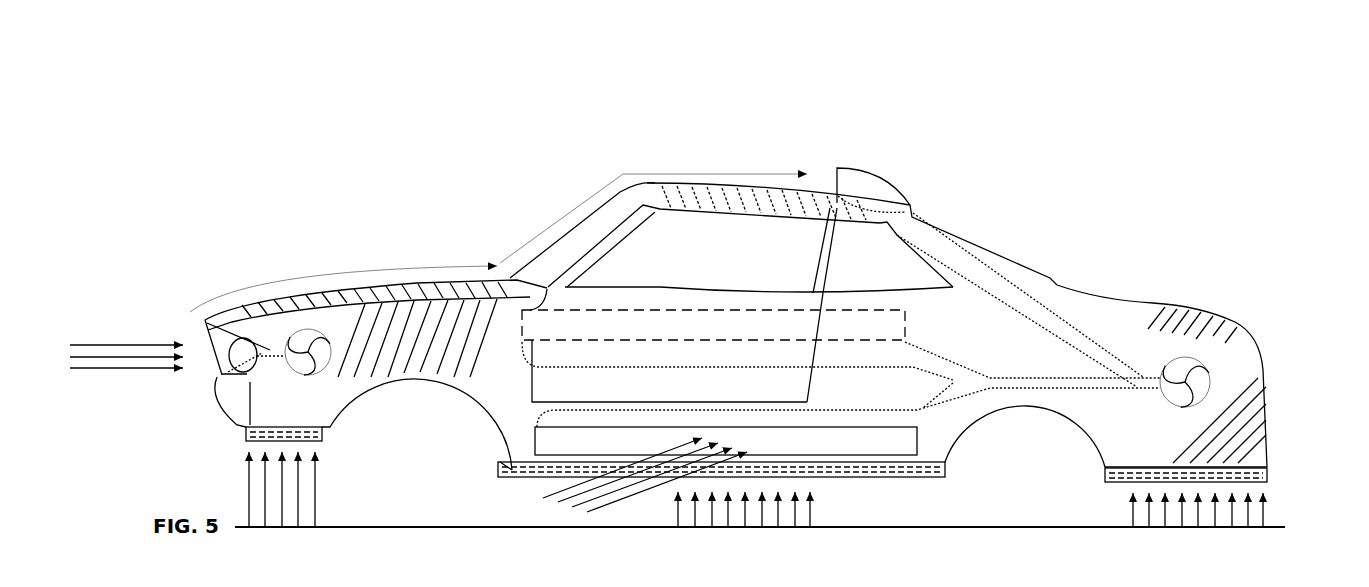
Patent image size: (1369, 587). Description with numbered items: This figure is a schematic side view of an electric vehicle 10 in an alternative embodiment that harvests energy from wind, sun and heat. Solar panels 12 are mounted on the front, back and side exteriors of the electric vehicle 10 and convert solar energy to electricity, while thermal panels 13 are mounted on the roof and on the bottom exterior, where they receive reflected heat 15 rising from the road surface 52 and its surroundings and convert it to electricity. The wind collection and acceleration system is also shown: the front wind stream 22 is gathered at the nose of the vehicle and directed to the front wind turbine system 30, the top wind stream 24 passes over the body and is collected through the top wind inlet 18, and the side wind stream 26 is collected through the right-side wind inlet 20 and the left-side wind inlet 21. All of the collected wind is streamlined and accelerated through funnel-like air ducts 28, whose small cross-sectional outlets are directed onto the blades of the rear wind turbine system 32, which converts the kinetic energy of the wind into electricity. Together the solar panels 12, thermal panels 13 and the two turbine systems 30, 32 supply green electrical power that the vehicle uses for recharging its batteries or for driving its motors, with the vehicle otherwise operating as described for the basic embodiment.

The electric vehicle 10 is at (1082, 276).
The solar panels 12 is at (352, 300).
The thermal panel 13 is at (322, 434).
The reflected heat 15 is at (315, 468).
The top wind inlet 18 is at (853, 162).
The right-side wind inlet 20 is at (843, 447).
The left-side wind inlet 21 is at (650, 333).
The front wind stream 22 is at (108, 368).
The top wind stream 24 is at (782, 172).
The side wind stream 26 is at (636, 492).
The air duct 28 is at (270, 348).
The front wind turbine system 30 is at (242, 373).
The rear wind turbine system 32 is at (1212, 380).
The road surface 52 is at (1280, 527).